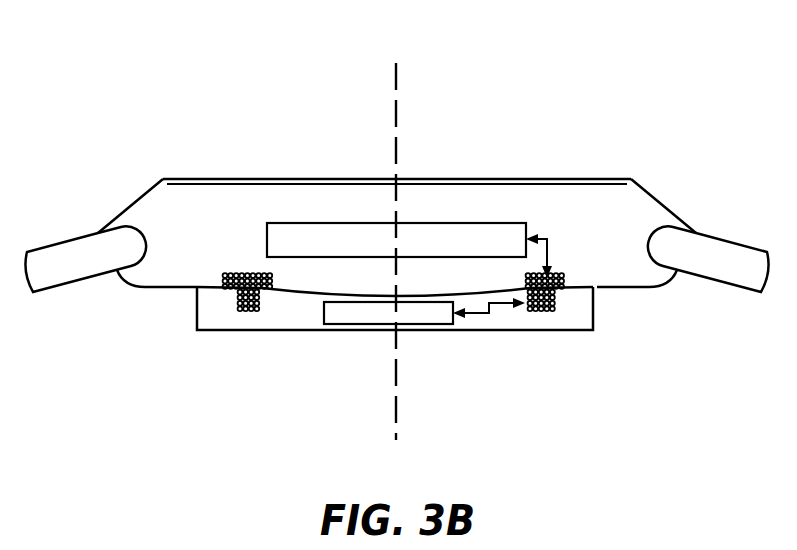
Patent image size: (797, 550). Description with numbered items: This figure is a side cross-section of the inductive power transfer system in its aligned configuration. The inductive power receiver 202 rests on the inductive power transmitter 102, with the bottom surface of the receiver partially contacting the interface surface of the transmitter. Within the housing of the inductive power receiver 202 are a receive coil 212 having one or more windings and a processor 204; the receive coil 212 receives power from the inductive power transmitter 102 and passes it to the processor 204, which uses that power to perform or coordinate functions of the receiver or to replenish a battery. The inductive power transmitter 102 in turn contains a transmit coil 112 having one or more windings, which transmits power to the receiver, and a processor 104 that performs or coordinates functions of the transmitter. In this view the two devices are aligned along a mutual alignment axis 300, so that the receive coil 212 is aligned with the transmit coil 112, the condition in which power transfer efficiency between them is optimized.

The alignment axis 300 is at (397, 65).
The inductive power receiver 202 is at (112, 193).
The processor 204 is at (265, 231).
The receive coil 212 is at (255, 273).
The transmit coil 112 is at (262, 307).
The processor 104 is at (393, 325).
The inductive power transmitter 102 is at (593, 332).